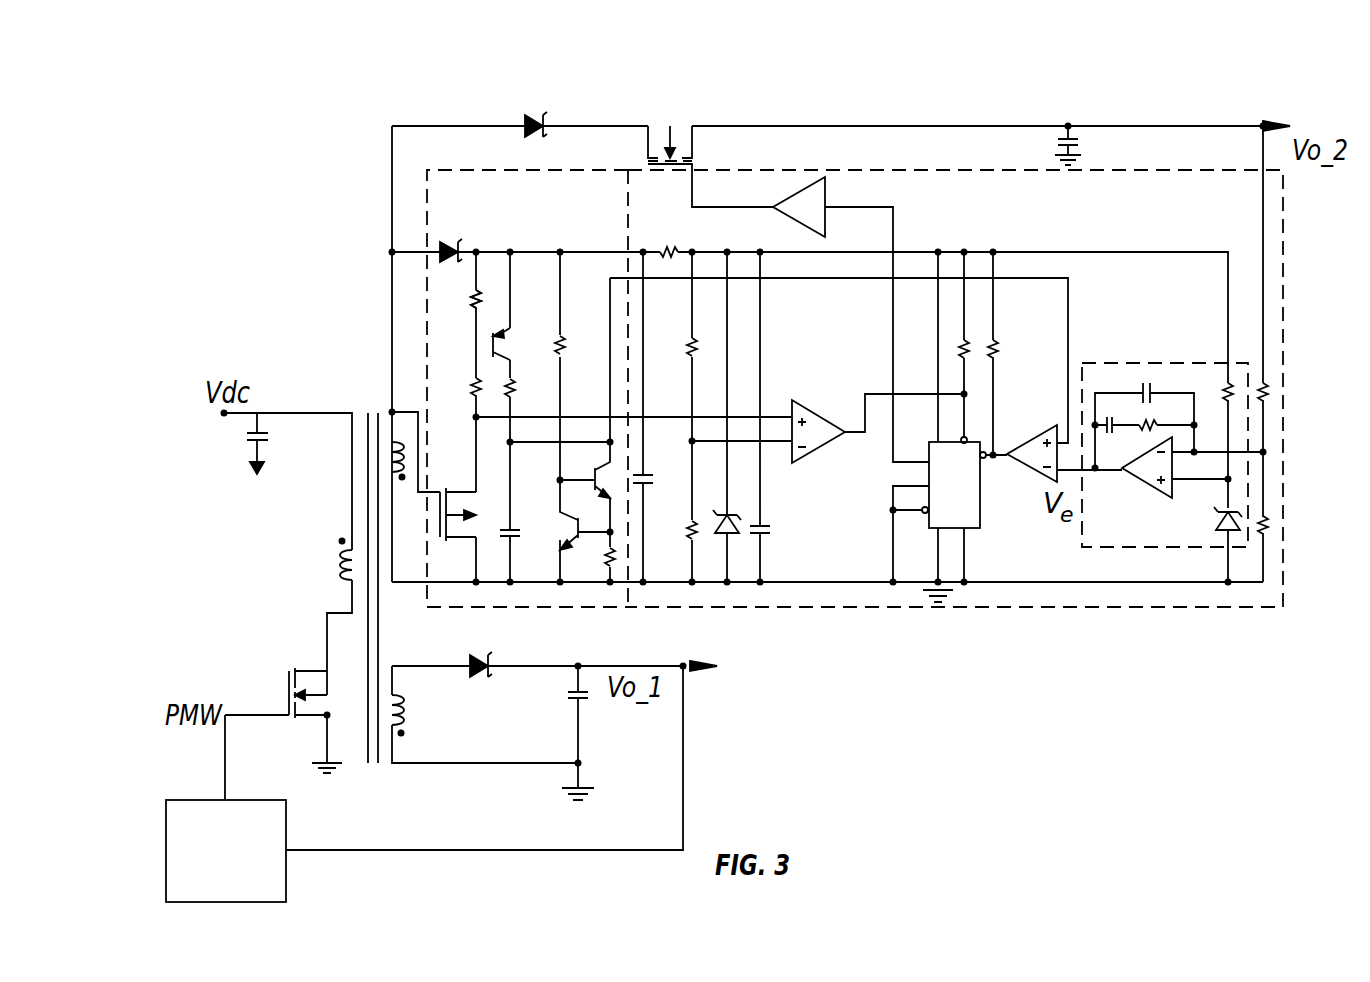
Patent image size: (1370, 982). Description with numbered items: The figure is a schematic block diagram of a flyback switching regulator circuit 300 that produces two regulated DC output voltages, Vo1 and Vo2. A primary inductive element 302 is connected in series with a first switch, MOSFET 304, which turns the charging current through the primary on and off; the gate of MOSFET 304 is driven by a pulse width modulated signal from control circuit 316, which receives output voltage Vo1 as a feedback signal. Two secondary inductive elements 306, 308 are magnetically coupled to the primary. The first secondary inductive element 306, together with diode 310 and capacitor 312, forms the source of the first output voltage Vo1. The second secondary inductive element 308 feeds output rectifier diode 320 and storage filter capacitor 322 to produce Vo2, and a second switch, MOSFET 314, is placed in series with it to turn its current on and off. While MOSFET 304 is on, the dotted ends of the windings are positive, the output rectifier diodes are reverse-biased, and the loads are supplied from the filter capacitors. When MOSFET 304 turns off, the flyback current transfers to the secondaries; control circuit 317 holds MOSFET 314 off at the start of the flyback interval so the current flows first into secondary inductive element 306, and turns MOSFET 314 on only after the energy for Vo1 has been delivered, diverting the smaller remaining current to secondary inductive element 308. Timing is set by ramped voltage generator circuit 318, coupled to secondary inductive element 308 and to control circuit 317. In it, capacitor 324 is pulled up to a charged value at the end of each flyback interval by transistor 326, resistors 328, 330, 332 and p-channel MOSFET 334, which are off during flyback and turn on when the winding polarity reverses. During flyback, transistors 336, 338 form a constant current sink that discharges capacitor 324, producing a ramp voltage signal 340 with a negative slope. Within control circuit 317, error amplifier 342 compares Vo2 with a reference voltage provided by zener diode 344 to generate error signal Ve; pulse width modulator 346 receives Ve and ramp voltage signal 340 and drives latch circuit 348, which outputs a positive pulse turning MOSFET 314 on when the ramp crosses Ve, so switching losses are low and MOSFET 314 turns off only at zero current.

The regulator circuit 300 is at (1086, 94).
The primary inductive element 302 is at (337, 547).
The MOSFET 304 is at (288, 691).
The secondary inductive element 306 is at (407, 717).
The secondary inductive element 308 is at (391, 438).
The diode 310 is at (482, 682).
The capacitor 312 is at (589, 701).
The MOSFET 314 is at (670, 127).
The control circuit 316 is at (200, 800).
The control circuit 317 is at (998, 608).
The ramped voltage generator circuit 318 is at (490, 170).
The output rectifier diode 320 is at (530, 118).
The storage filter capacitor 322 is at (1063, 128).
The capacitor 324 is at (508, 538).
The transistor 326 is at (503, 336).
The resistor 328 is at (476, 298).
The resistor 330 is at (512, 383).
The resistor 332 is at (476, 386).
The MOSFET 334 is at (455, 492).
The transistor 336 is at (574, 542).
The transistor 338 is at (606, 487).
The ramp voltage signal 340 is at (1074, 308).
The error amplifier 342 is at (1185, 362).
The zener diode 344 is at (1216, 513).
The pulse width modulator 346 is at (1053, 424).
The latch circuit 348 is at (980, 530).